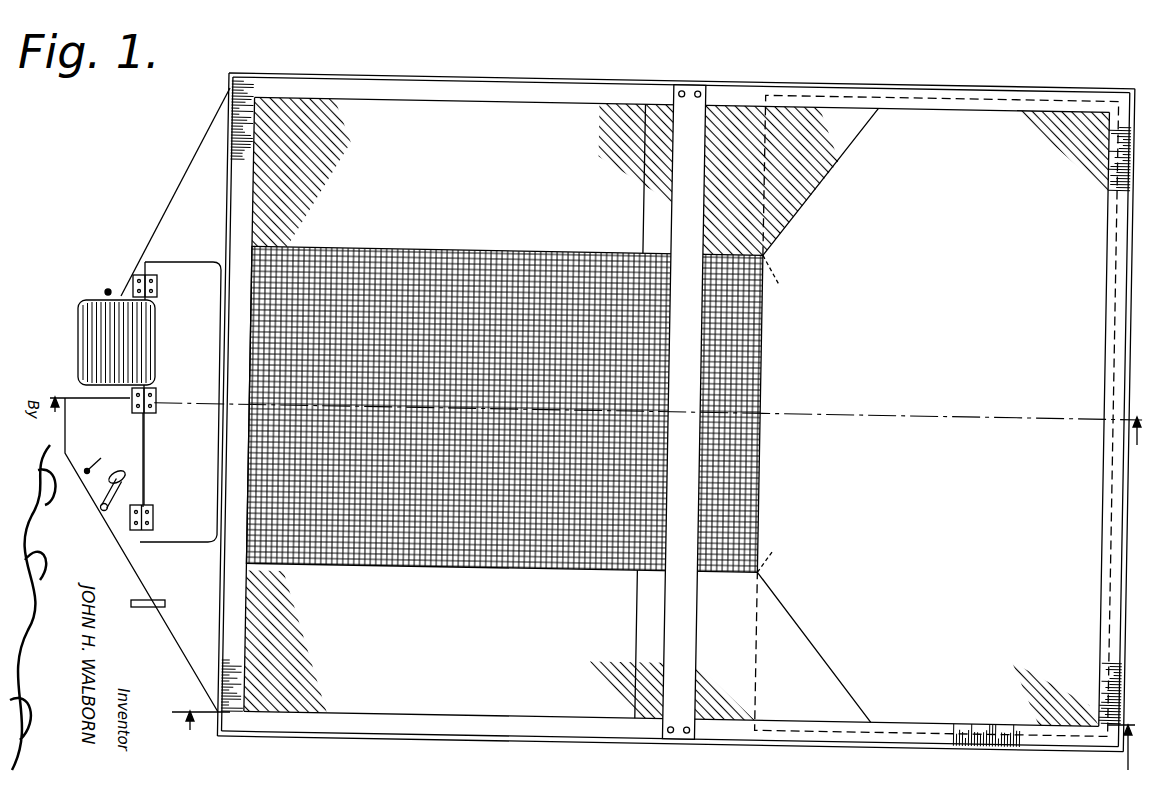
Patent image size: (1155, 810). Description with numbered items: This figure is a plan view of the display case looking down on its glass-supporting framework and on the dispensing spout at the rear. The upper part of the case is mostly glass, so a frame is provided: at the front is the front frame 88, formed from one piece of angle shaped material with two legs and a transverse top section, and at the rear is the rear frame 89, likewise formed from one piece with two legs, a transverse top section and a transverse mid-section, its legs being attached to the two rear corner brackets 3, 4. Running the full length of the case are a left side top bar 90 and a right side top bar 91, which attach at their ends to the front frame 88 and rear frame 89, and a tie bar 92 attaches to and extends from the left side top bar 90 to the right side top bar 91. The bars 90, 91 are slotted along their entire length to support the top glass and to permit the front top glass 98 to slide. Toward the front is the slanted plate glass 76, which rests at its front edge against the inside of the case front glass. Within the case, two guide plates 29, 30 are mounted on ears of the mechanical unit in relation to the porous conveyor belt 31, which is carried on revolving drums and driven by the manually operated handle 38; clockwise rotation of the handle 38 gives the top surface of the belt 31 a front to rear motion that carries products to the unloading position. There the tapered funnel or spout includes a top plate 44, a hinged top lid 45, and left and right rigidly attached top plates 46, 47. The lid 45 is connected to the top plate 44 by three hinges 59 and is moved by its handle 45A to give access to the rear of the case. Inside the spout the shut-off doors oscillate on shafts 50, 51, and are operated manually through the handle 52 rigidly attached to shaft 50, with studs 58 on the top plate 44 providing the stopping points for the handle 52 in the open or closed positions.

The right side top bar 91 is at (487, 86).
The rear frame 89 is at (230, 101).
The front frame 88 is at (1110, 275).
The left side top bar 90 is at (732, 740).
The guide plate 30 is at (453, 247).
The guide plate 29 is at (425, 566).
The porous conveyor belt 31 is at (780, 322).
The tie bar 92 is at (681, 196).
The front top glass 98 is at (932, 416).
The slanted plate glass 76 is at (886, 738).
The rear corner bracket 4 is at (594, 432).
The rear corner bracket 3 is at (653, 752).
The right side rigidly attached top plate 47 is at (168, 225).
The left side rigidly attached top plate 46 is at (186, 629).
The hinged top lid 45 is at (197, 265).
The handle 45A is at (88, 307).
The shaft 51 is at (108, 288).
The hinges 59 is at (158, 285).
The top plate 44 is at (119, 460).
The shaft 50 is at (117, 518).
The handle 52 is at (126, 491).
The studs 58 is at (131, 470).
The handle 38 is at (145, 599).